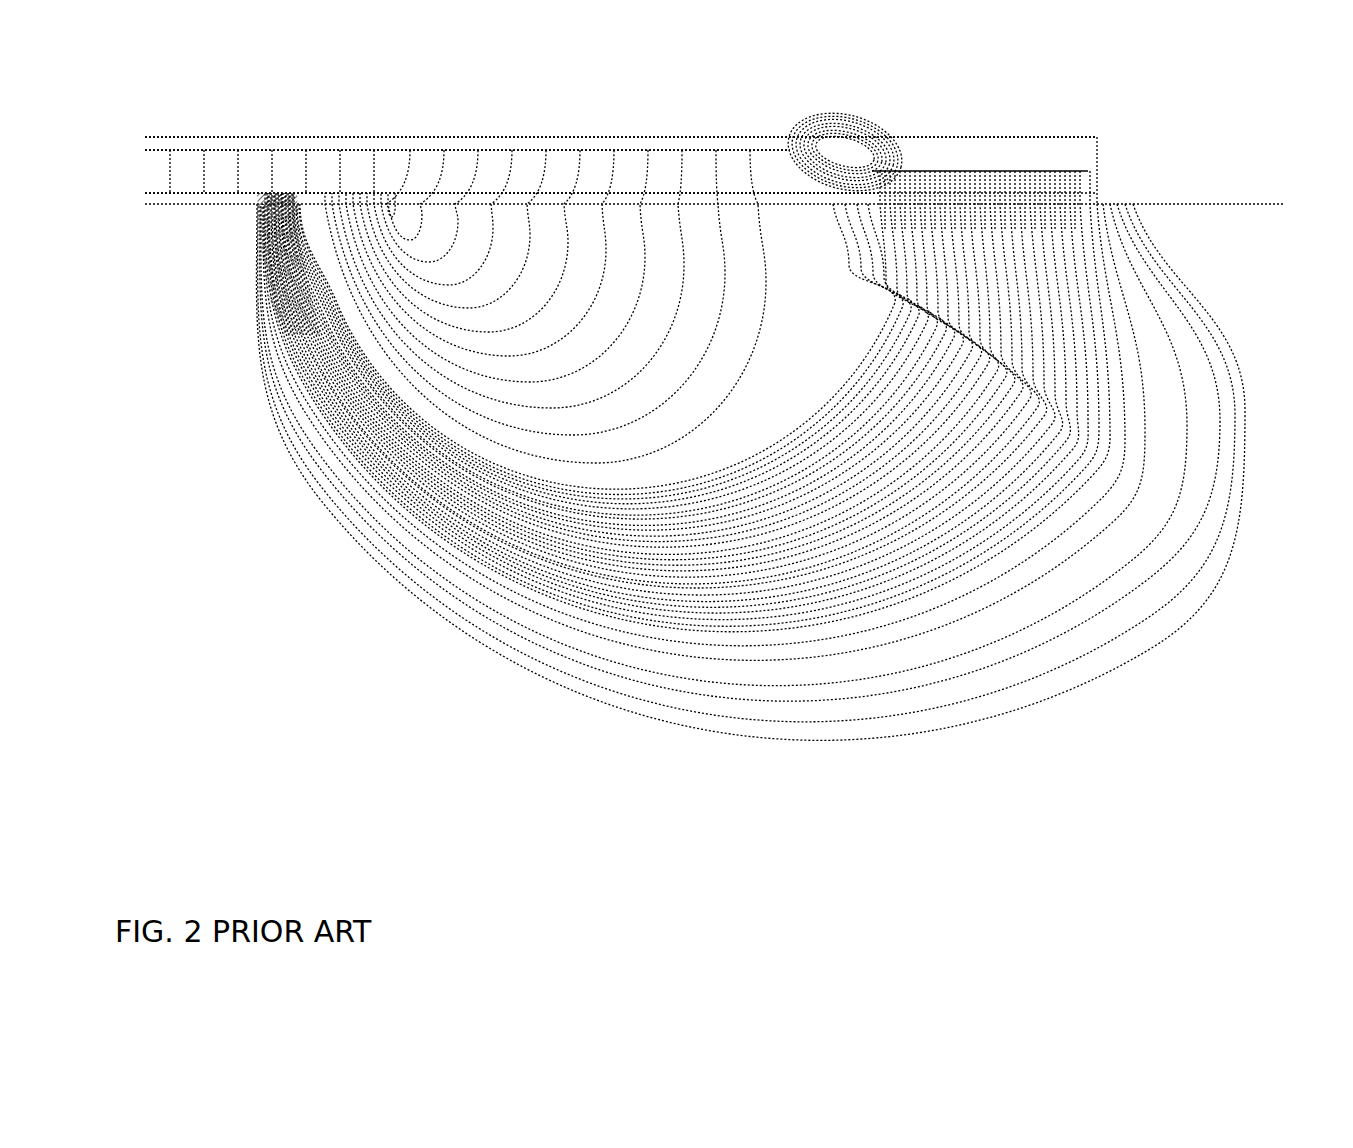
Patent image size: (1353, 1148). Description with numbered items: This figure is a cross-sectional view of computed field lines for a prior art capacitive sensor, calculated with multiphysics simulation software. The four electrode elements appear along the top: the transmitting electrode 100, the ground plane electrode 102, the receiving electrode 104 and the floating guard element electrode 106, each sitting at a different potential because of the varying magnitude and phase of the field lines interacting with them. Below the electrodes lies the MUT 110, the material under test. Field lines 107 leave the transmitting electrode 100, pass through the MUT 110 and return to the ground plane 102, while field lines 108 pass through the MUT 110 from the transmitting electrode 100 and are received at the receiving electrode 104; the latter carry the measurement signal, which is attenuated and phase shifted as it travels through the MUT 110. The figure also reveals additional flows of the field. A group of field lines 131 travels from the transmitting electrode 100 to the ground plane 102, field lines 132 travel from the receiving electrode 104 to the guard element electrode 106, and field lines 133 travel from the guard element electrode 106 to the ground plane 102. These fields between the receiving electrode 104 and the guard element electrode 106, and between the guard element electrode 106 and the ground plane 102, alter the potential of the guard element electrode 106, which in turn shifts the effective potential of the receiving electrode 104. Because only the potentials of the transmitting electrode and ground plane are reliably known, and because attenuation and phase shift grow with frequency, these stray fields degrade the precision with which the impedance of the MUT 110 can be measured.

The transmitting electrode 100 is at (226, 208).
The ground plane electrode 102 is at (615, 127).
The field lines 131 is at (323, 168).
The field lines 132 is at (1032, 177).
The field lines 133 is at (879, 152).
The floating guard element electrode 106 is at (1007, 167).
The receiving electrode 104 is at (1031, 207).
The field lines 107 is at (560, 303).
The field lines 108 is at (620, 576).
The MUT 110 is at (522, 688).